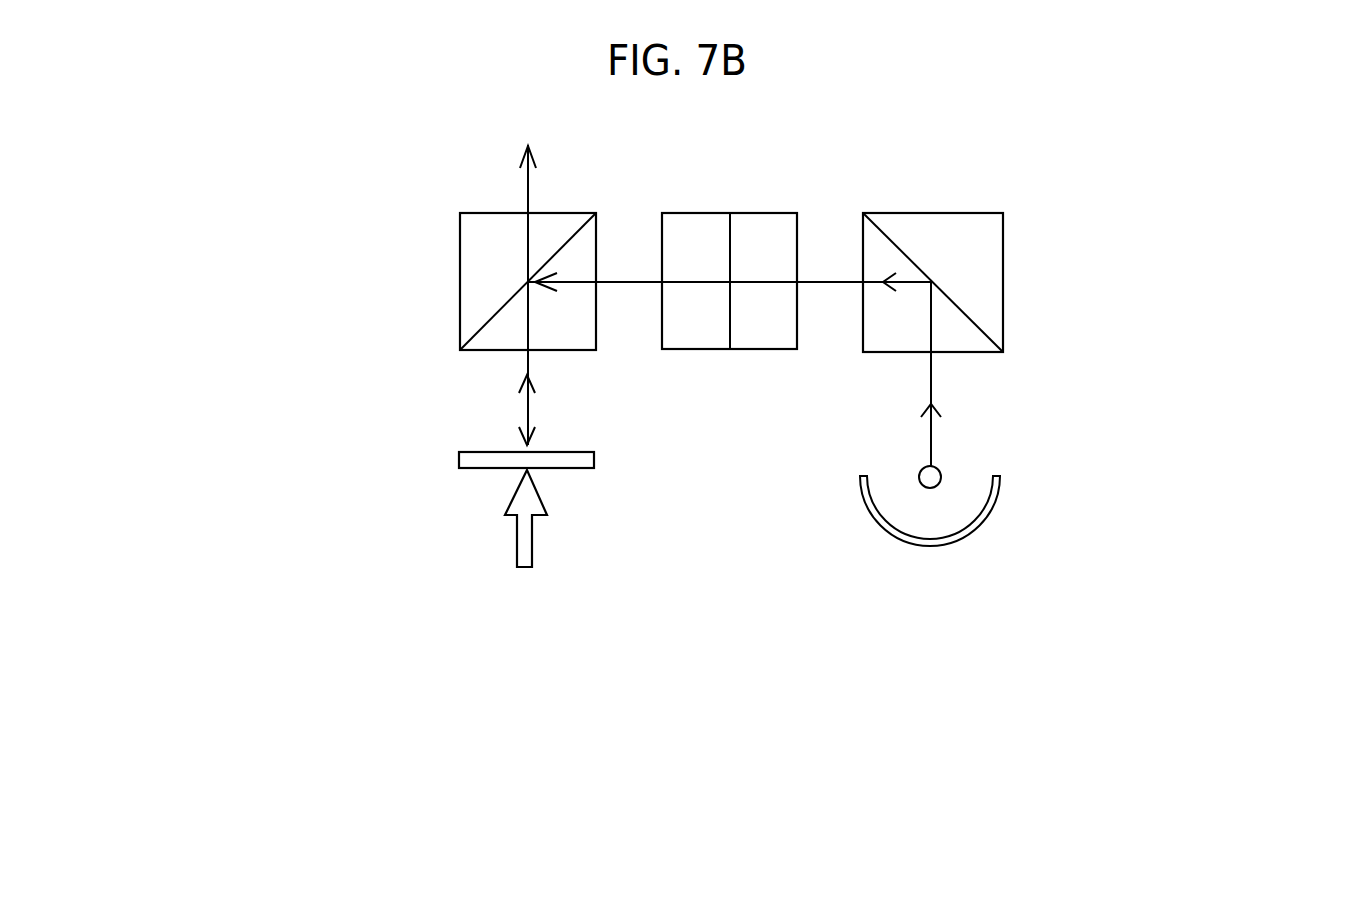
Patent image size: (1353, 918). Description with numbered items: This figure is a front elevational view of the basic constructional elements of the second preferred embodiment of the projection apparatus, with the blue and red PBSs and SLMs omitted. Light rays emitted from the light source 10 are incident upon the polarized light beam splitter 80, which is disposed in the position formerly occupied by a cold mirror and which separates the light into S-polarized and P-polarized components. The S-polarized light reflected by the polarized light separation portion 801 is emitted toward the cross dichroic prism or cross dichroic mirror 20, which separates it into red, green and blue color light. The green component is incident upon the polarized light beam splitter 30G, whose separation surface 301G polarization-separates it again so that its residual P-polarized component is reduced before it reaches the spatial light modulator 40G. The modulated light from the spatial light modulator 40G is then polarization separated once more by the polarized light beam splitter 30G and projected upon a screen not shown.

The polarized light beam splitter 30G is at (460, 233).
The polarization separating surface of beam splitter 30G 301G is at (483, 326).
The spatial light modulator 40G is at (460, 460).
The cross dichroic prism or cross dichroic mirror 20 is at (702, 345).
The polarized light beam splitter 80 is at (1003, 262).
The polarized light separation portion 801 is at (975, 323).
The light source 10 is at (998, 492).